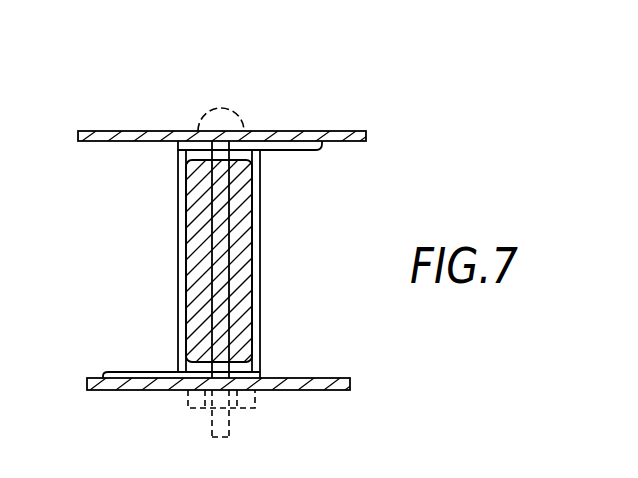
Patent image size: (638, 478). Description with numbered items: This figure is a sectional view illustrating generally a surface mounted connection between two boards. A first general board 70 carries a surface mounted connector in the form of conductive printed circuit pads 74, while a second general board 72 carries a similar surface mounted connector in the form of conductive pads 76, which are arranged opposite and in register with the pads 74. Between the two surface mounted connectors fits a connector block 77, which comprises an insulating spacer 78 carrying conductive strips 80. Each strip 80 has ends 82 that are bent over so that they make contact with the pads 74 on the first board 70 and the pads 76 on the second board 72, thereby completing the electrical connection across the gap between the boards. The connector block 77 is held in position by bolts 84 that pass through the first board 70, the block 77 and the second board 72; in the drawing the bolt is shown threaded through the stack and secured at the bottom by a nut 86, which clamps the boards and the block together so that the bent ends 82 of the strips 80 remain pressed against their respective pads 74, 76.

The first general board 70 is at (342, 131).
The second general board 72 is at (320, 391).
The conductive printed circuit pads 74 is at (279, 144).
The conductive pads 76 is at (152, 374).
The connector block 77 is at (170, 191).
The insulating spacer 78 is at (190, 241).
The conductive strips 80 is at (258, 279).
The ends 82 is at (208, 157).
The bolts 84 is at (221, 113).
The nut 86 is at (247, 408).